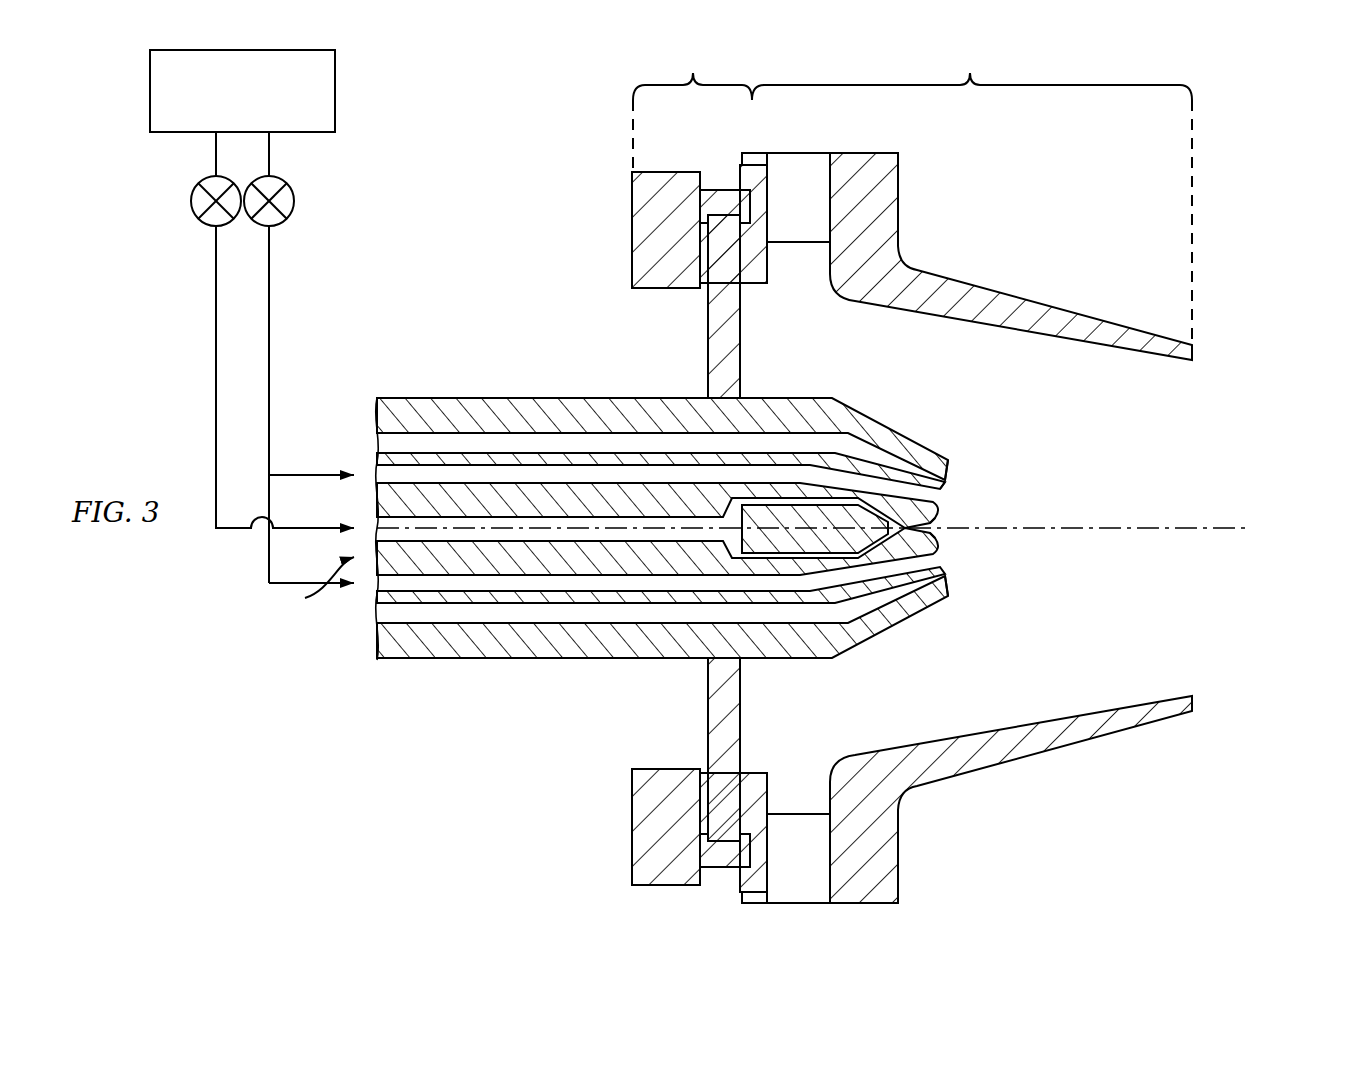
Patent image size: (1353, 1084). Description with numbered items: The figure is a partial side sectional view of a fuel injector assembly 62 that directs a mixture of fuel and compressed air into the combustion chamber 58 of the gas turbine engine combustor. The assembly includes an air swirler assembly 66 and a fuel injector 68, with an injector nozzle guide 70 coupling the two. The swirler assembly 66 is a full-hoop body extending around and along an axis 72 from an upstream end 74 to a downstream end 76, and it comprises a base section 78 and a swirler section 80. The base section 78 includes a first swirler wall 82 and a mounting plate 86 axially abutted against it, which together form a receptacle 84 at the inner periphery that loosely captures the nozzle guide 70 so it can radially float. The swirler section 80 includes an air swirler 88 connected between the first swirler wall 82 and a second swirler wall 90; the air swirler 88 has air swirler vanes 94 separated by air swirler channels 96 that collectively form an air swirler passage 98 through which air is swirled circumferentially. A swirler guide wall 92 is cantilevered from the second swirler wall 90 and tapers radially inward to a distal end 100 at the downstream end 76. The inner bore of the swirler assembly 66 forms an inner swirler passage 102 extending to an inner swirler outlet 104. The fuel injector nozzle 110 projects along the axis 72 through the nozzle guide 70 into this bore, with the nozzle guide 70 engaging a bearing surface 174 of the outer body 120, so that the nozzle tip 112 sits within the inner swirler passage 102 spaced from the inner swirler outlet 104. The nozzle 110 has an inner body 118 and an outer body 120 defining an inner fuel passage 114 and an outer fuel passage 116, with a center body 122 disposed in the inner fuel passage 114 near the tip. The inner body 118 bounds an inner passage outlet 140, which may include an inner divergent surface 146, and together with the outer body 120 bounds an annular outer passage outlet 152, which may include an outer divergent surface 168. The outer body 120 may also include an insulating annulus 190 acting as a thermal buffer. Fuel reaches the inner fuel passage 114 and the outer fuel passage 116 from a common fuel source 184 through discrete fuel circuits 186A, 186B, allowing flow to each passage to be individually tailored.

The combustion chamber 58 is at (1283, 469).
The fuel injector assembly 62 is at (484, 158).
The air swirler assembly 66 is at (1059, 232).
The fuel injector 68 is at (530, 352).
The injector nozzle guide 70 is at (692, 317).
The axis 72 is at (1245, 540).
The upstream end 74 is at (630, 232).
The downstream end 76 is at (1266, 361).
The base section 78 is at (692, 106).
The swirler section 80 is at (972, 192).
The first swirler wall 82 is at (723, 165).
The receptacle 84 is at (709, 192).
The mounting plate 86 is at (655, 172).
The air swirler 88 is at (802, 140).
The second swirler wall 90 is at (880, 153).
The swirler guide wall 92 is at (1011, 531).
The air swirler vanes 94 is at (800, 245).
The air swirler channels 96 is at (1006, 531).
The air swirler passage 98 is at (1006, 531).
The distal end 100 is at (1195, 352).
The inner swirler passage 102 is at (1020, 411).
The inner swirler outlet 104 is at (1174, 413).
The fuel injector nozzle 110 is at (530, 682).
The nozzle tip 112 is at (950, 600).
The inner fuel passage 114 is at (428, 553).
The outer fuel passage 116 is at (438, 456).
The inner body 118 is at (305, 589).
The outer body 120 is at (364, 382).
The center body 122 is at (786, 540).
The inner passage outlet 140 is at (962, 537).
The inner divergent surface 146 is at (945, 505).
The outer passage outlet 152 is at (974, 573).
The outer divergent surface 168 is at (952, 468).
The bearing surface 174 is at (765, 396).
The fuel source 184 is at (222, 118).
The fuel circuit 186A is at (214, 345).
The fuel circuit 186B is at (272, 265).
The insulating annulus 190 is at (600, 446).